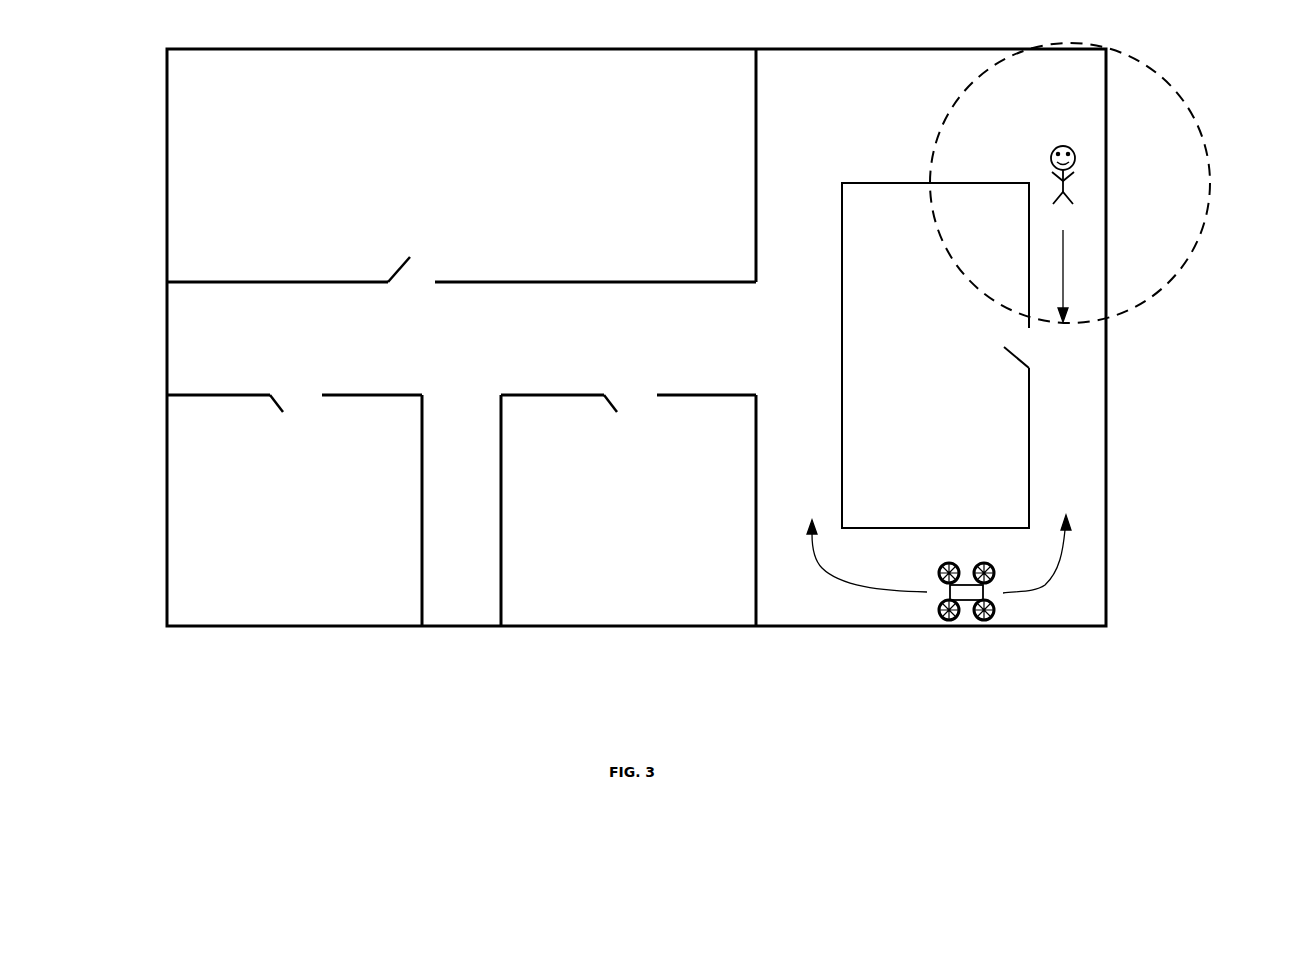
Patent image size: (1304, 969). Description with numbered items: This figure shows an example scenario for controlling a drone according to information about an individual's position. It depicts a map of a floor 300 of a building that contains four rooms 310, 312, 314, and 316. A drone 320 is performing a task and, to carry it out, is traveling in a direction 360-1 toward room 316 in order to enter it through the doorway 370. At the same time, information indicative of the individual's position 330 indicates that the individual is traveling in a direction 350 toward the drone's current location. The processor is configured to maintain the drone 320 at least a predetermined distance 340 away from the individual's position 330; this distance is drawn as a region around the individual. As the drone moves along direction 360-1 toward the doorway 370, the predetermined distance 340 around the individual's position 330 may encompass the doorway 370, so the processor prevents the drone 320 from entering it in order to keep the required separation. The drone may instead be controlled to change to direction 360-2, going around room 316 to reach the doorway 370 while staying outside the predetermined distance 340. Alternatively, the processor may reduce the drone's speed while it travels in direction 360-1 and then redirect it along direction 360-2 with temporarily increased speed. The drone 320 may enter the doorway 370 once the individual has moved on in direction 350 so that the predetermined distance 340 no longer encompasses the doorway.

The floor 300 is at (167, 337).
The room 310 is at (426, 173).
The room 312 is at (277, 520).
The room 314 is at (625, 520).
The room 316 is at (928, 421).
The drone 320 is at (968, 617).
The individual's position 330 is at (1066, 143).
The predetermined distance 340 is at (1213, 183).
The direction 350 is at (1066, 270).
The direction 360-1 is at (1050, 602).
The direction 360-2 is at (853, 578).
The doorway 370 is at (992, 338).